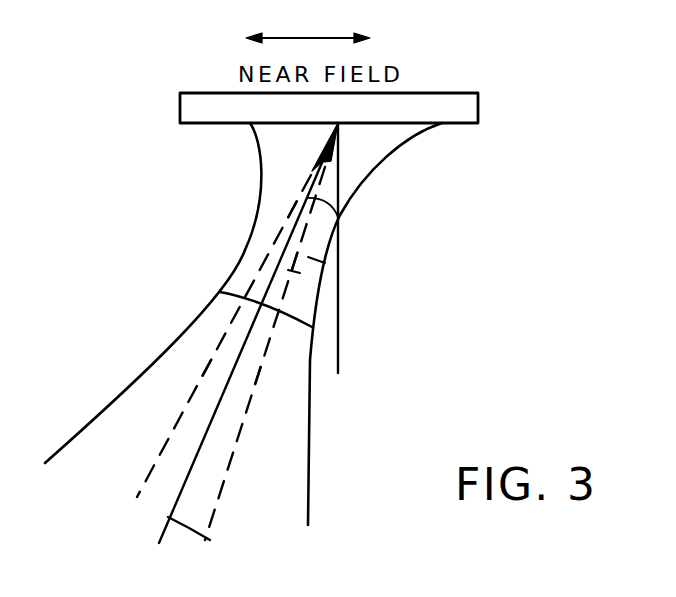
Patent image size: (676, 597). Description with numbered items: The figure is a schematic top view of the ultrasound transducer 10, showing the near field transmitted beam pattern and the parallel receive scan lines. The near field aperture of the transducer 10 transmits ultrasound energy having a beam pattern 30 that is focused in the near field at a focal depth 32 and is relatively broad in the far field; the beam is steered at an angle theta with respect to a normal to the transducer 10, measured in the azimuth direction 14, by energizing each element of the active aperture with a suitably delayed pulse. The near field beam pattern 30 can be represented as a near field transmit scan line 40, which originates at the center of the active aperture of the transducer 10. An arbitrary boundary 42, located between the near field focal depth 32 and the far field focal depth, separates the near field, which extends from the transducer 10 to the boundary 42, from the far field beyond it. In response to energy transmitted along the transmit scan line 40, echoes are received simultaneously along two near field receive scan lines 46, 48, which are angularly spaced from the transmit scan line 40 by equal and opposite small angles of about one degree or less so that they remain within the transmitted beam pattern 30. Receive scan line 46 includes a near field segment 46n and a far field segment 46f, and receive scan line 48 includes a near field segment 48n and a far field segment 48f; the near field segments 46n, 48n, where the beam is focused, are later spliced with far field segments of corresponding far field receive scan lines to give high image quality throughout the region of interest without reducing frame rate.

The transducer 10 is at (490, 105).
The azimuth direction 14 is at (307, 33).
The beam pattern 30 is at (377, 178).
The focal depth 32 is at (265, 246).
The transmit scan line 40 is at (210, 540).
The boundary 42 is at (222, 293).
The near field receive scan line 46 is at (150, 457).
The near field segment 46n is at (293, 213).
The far field segment 46f is at (203, 373).
The near field receive scan line 48 is at (245, 444).
The near field segment 48n is at (291, 271).
The far field segment 48f is at (257, 383).